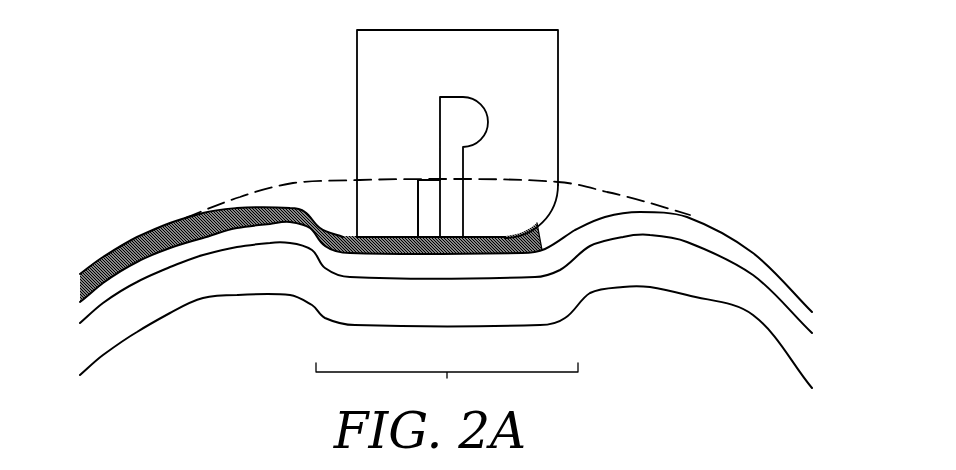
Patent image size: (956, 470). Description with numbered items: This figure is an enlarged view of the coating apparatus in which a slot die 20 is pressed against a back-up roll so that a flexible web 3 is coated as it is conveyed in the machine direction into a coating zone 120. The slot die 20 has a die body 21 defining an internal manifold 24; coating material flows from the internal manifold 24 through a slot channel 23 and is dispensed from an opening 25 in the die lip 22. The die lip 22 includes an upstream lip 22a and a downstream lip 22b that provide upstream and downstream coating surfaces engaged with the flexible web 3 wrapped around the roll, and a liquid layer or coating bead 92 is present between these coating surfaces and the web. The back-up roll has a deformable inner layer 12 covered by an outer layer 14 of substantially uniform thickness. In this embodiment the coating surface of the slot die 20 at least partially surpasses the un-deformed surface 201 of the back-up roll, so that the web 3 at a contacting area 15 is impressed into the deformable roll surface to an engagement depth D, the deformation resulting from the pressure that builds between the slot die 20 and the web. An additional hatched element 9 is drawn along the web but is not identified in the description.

The flexible web 3 is at (753, 267).
The coating layer 9 is at (111, 252).
The deformable inner layer 12 is at (696, 353).
The outer layer 14 is at (706, 296).
The contacting area 15 is at (447, 384).
The slot die 20 is at (588, 66).
The die body 21 is at (367, 48).
The die lip 22 is at (334, 281).
The upstream lip 22a is at (512, 240).
The downstream lip 22b is at (392, 240).
The slot channel 23 is at (453, 197).
The internal manifold 24 is at (456, 108).
The opening 25 is at (448, 240).
The liquid layer (coating bead) 92 is at (538, 241).
The coating zone 120 is at (547, 225).
The un-deformed surface 201 is at (513, 182).
The engagement depth D is at (418, 217).